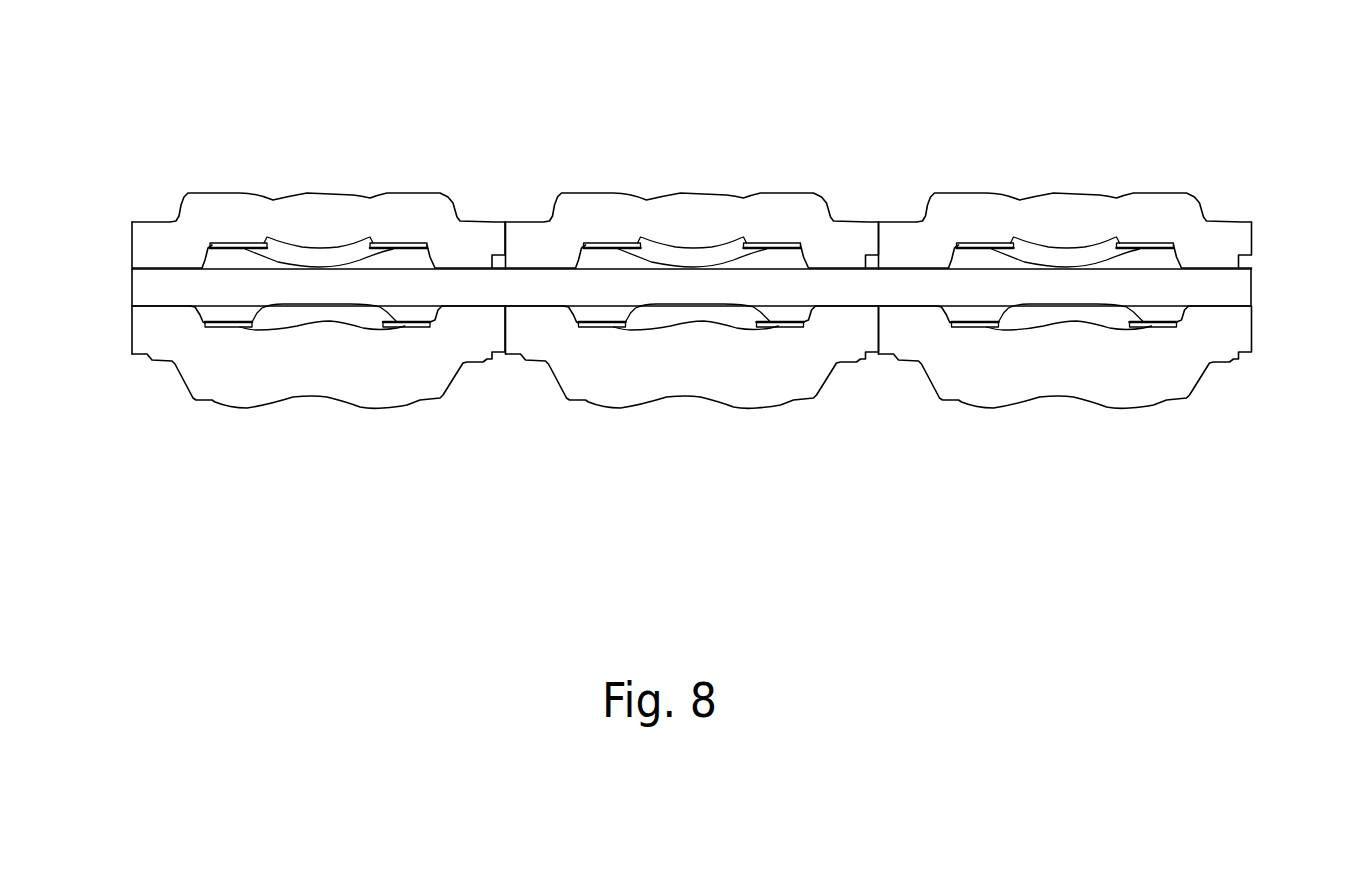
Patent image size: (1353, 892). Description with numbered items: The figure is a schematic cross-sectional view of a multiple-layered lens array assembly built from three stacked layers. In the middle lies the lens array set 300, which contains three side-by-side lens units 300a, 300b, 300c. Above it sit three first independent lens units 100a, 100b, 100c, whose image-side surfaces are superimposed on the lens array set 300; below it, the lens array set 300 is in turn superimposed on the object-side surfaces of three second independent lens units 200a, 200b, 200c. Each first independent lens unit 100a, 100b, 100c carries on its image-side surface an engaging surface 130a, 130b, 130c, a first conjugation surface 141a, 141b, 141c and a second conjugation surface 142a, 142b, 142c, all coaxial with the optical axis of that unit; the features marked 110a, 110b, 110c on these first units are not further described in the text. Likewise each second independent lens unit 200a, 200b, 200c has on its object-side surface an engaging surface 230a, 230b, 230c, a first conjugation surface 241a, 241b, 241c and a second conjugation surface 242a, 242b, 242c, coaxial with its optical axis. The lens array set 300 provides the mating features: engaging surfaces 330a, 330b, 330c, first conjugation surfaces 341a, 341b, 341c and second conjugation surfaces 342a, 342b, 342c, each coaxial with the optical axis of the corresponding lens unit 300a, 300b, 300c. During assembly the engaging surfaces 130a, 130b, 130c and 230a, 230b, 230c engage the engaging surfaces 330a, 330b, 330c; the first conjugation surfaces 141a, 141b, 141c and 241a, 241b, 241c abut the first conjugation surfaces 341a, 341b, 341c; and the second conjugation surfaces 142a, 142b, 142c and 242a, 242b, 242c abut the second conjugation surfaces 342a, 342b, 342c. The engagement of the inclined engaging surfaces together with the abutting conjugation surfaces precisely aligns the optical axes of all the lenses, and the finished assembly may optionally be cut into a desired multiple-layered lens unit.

The lens array set 300 is at (153, 290).
The lens unit 300a is at (322, 287).
The lens unit 300b is at (692, 431).
The lens unit 300c is at (1065, 431).
The first independent lens unit 100a is at (145, 243).
The first independent lens unit 100b is at (699, 189).
The first independent lens unit 100c is at (1072, 189).
The first accommodating space of first unit 110a is at (324, 213).
The first accommodating space of second unit 110b is at (692, 170).
The first accommodating space of third unit 110c is at (1065, 170).
The engaging surface 130a is at (435, 256).
The engaging surface 130b is at (795, 175).
The engaging surface 130c is at (1168, 175).
The first conjugation surface 141a is at (407, 246).
The first conjugation surface 141b is at (762, 149).
The first conjugation surface 141c is at (1135, 149).
The second conjugation surface 142a is at (167, 267).
The second conjugation surface 142b is at (596, 207).
The second conjugation surface 142c is at (969, 207).
The second independent lens unit 200a is at (147, 330).
The second independent lens unit 200b is at (692, 397).
The second independent lens unit 200c is at (1065, 397).
The engaging surface 230a is at (437, 313).
The engaging surface 230b is at (793, 410).
The engaging surface 230c is at (1166, 410).
The first conjugation surface 241a is at (407, 327).
The first conjugation surface 241b is at (761, 435).
The first conjugation surface 241c is at (1134, 435).
The second conjugation surface 242a is at (167, 308).
The second conjugation surface 242b is at (596, 378).
The second conjugation surface 242c is at (969, 378).
The engaging surface 330a is at (419, 299).
The engaging surface 330b is at (793, 299).
The engaging surface 330c is at (1166, 299).
The first conjugation surface 341a is at (387, 300).
The first conjugation surface 341b is at (761, 300).
The first conjugation surface 341c is at (1134, 300).
The second conjugation surface 342a is at (222, 298).
The second conjugation surface 342b is at (596, 298).
The second conjugation surface 342c is at (969, 298).